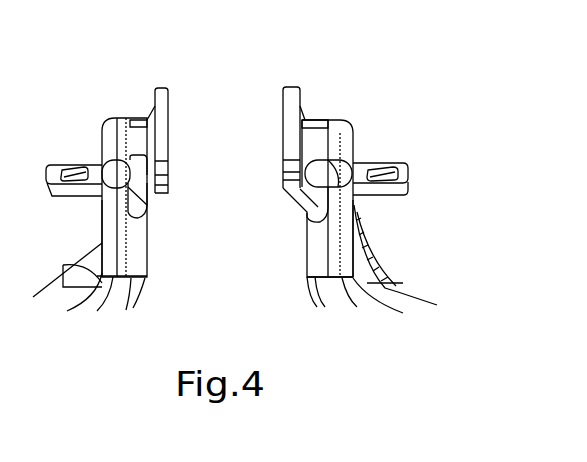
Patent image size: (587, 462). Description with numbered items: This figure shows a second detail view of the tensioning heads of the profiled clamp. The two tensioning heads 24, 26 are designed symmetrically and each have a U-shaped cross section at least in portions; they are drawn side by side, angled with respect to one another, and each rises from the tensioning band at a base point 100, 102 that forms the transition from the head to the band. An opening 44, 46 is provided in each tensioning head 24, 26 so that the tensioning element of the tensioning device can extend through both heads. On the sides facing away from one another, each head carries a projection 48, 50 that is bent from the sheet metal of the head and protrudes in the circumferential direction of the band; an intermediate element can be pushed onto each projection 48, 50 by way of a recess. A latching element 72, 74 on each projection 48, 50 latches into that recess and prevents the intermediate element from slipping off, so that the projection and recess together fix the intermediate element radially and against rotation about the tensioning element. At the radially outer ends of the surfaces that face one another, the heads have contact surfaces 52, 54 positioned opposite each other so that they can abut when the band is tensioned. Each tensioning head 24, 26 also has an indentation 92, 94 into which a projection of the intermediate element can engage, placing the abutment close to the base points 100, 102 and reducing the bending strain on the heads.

The tensioning head 24 is at (126, 119).
The tensioning head 26 is at (326, 119).
The opening 44 is at (98, 229).
The opening 46 is at (364, 217).
The projection 48 is at (45, 188).
The projection 50 is at (401, 164).
The contact surface 52 is at (162, 88).
The contact surface 54 is at (289, 87).
The latching element 72 is at (72, 165).
The latching element 74 is at (383, 166).
The indentation 92 is at (62, 291).
The indentation 94 is at (380, 275).
The base point 100 is at (140, 298).
The base point 102 is at (310, 292).